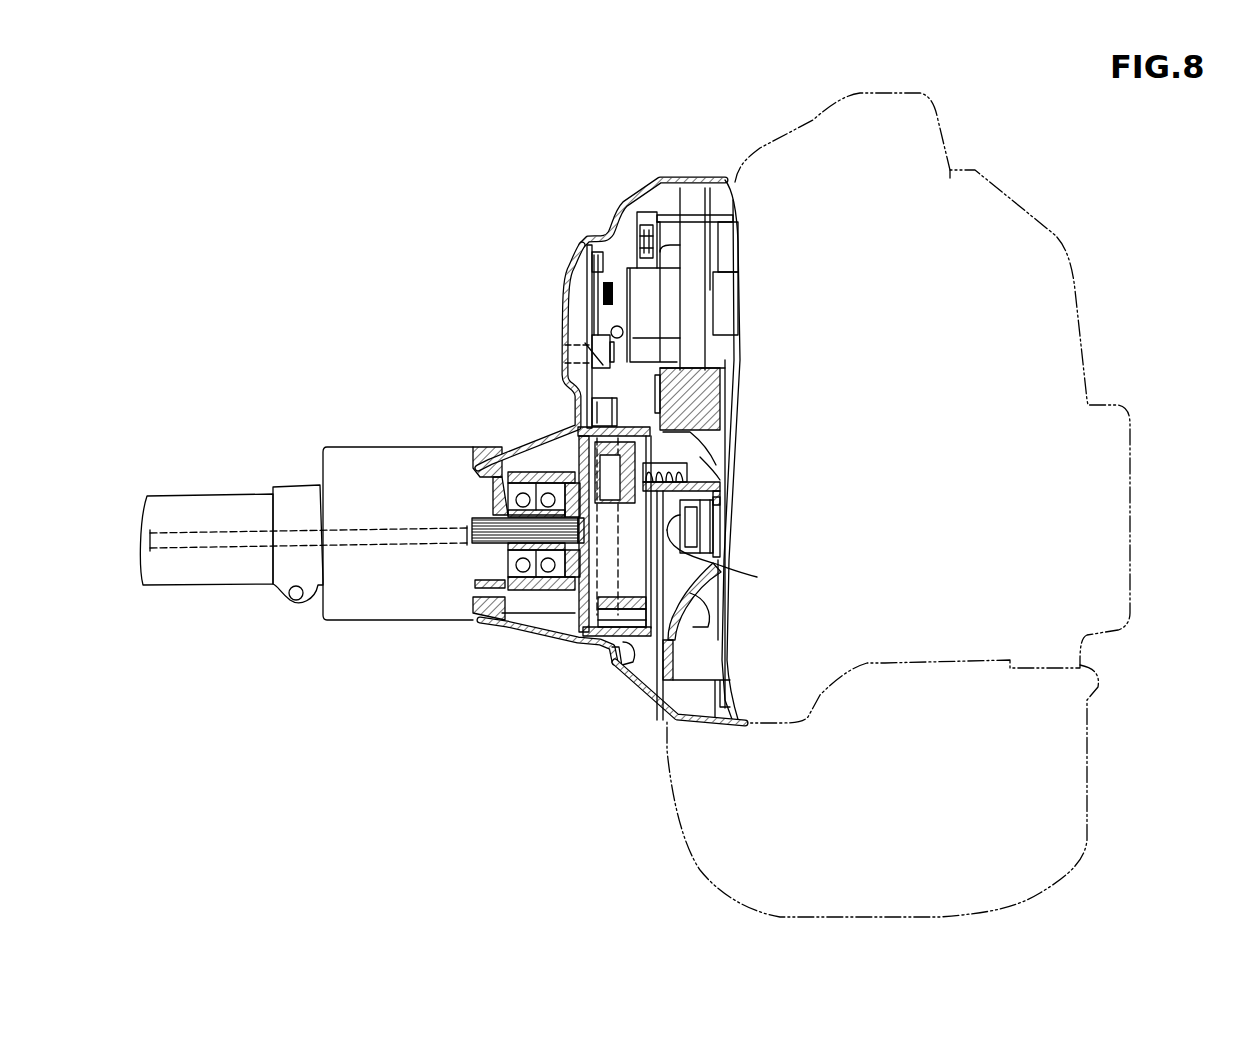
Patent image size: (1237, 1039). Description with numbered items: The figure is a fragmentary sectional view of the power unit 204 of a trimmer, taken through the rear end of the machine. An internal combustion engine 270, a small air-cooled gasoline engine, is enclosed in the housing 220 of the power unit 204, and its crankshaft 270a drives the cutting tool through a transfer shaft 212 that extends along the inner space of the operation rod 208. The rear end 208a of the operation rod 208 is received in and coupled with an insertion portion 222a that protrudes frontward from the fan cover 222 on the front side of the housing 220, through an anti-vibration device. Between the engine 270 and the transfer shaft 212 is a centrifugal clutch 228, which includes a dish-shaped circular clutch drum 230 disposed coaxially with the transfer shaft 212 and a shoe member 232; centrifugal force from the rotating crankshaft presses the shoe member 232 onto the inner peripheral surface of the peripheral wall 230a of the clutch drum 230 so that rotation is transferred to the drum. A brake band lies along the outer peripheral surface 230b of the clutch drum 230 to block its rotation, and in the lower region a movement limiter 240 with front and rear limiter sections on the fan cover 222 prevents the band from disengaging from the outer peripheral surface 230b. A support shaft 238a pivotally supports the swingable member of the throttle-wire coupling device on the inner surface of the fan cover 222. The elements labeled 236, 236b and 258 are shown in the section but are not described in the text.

The power unit 204 is at (1032, 193).
The operation rod 208 is at (167, 496).
The rear end of the operation rod 208a is at (262, 520).
The transfer shaft 212 is at (192, 545).
The housing 220 is at (626, 198).
The fan cover 222 is at (560, 297).
The insertion portion 222a is at (398, 555).
The centrifugal clutch 228 is at (580, 637).
The clutch drum 230 is at (578, 455).
The peripheral wall of the clutch drum 230a is at (650, 632).
The outer peripheral surface of the clutch drum 230b is at (643, 410).
The shoe member 232 is at (513, 617).
The bracket 236 is at (610, 647).
The bolt 236b is at (606, 412).
The support shaft 238a is at (603, 355).
The movement limiter 240 is at (618, 674).
The stator bracket 258 is at (580, 242).
The internal combustion engine 270 is at (705, 692).
The crankshaft 270a is at (746, 544).